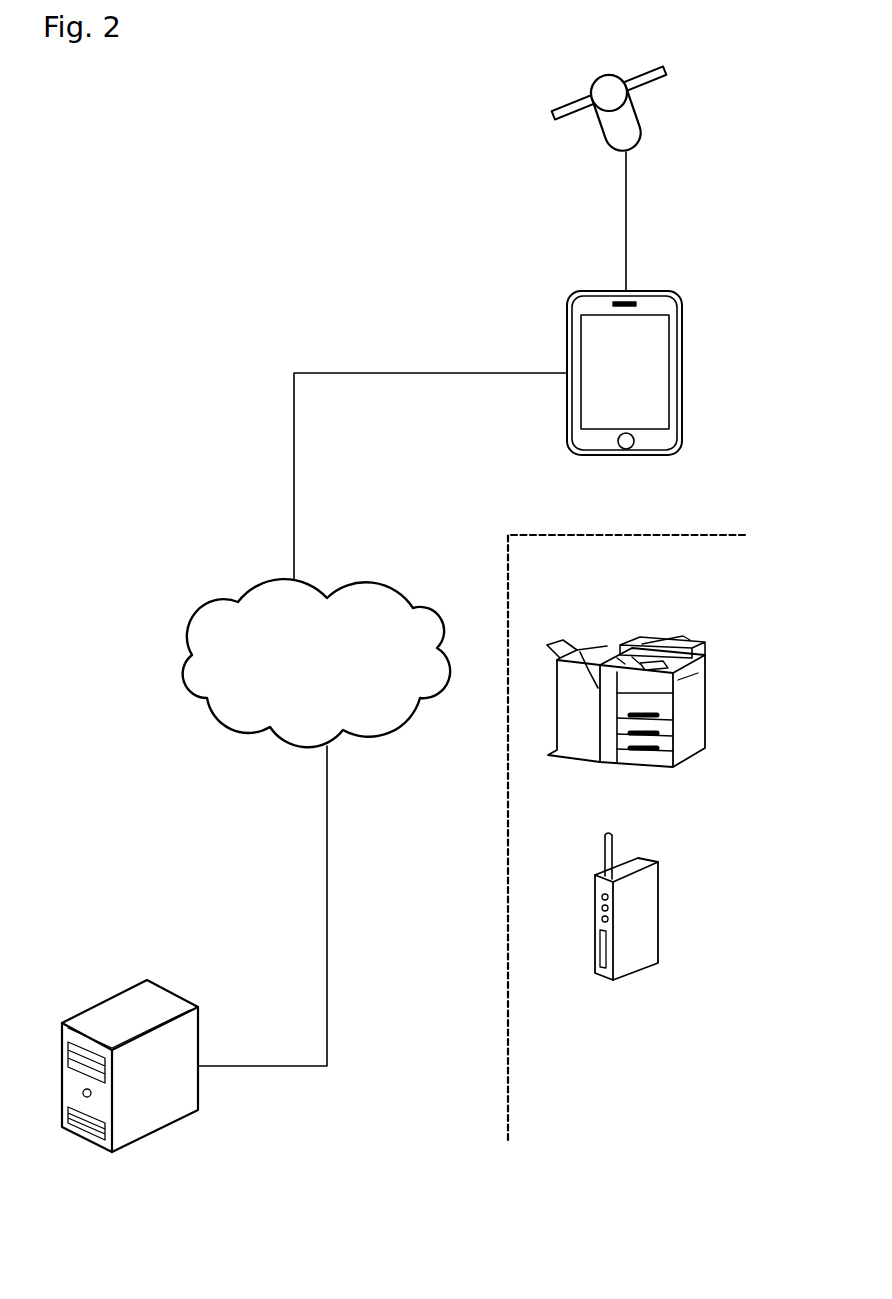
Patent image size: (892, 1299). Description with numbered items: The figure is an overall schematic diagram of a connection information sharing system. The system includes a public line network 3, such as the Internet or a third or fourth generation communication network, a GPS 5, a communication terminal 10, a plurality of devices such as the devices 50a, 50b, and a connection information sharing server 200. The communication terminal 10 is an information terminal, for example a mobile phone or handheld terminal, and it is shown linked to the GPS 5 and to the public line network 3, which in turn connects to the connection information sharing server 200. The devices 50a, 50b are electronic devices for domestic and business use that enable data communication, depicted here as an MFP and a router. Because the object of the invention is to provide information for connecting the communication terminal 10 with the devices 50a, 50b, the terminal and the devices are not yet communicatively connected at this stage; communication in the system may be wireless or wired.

The GPS 5 is at (592, 90).
The communication terminal 10 is at (683, 306).
The public line network 3 is at (403, 595).
The device 50a is at (704, 685).
The device 50b is at (658, 862).
The connection information sharing server 200 is at (148, 980).